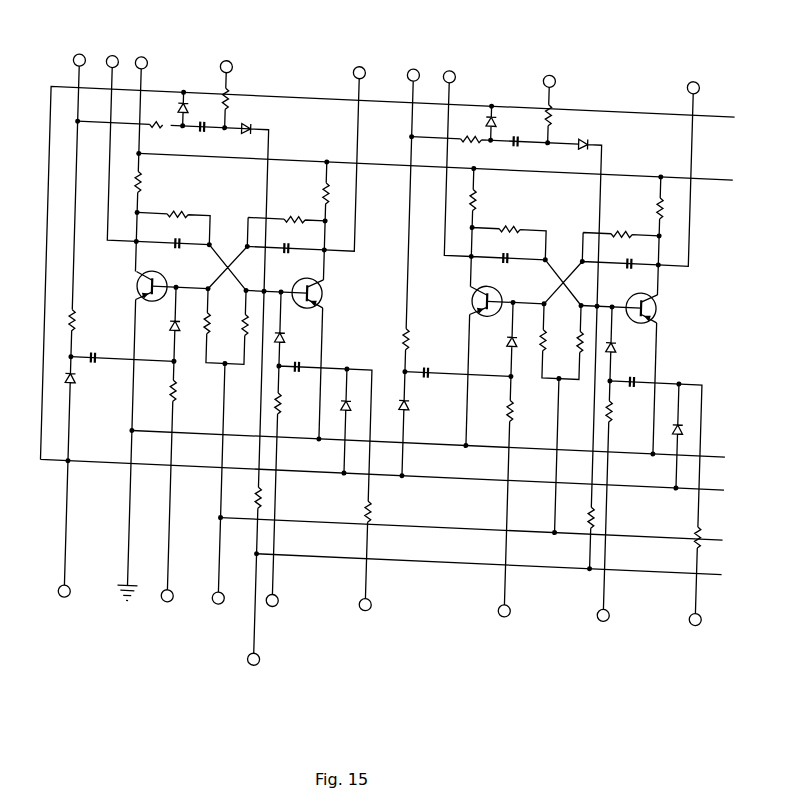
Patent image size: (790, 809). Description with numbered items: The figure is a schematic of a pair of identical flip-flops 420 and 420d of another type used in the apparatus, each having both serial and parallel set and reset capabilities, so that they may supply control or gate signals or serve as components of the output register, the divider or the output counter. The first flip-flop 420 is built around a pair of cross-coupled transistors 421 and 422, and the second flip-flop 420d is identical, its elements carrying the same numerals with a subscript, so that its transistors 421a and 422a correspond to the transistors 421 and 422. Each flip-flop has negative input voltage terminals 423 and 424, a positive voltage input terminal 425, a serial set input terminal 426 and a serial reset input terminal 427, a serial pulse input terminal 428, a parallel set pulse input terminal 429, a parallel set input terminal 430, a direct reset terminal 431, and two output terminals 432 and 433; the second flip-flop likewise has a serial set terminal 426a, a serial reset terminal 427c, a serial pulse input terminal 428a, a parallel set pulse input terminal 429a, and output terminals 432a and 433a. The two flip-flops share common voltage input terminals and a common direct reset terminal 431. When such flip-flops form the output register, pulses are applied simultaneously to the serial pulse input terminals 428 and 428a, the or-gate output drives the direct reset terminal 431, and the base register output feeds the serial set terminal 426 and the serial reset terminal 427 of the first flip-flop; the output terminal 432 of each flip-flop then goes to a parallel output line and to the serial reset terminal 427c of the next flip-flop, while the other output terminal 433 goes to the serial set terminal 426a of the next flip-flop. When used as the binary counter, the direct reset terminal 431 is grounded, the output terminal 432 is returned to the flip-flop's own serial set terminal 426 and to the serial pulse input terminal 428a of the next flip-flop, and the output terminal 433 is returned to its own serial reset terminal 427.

The flip-flop 420 is at (121, 618).
The second flip-flop circuit 420d is at (563, 600).
The transistor 421 is at (192, 254).
The transistor 422 is at (330, 276).
The transistor 421a is at (510, 271).
The transistor 422a is at (664, 276).
The negative input voltage terminal 423 is at (77, 595).
The negative input voltage terminal 424 is at (154, 53).
The positive voltage input terminal 425 is at (227, 594).
The serial set input terminal 426 is at (234, 50).
The serial set input terminal 426a is at (584, 36).
The serial reset input terminal 427 is at (182, 597).
The output terminal 427c is at (518, 592).
The serial pulse input terminal 428 is at (81, 51).
The serial pulse input terminal 428a is at (433, 26).
The parallel set pulse input terminal 429 is at (383, 592).
The parallel set pulse input terminal 429a is at (624, 593).
The parallel set input terminal 430 is at (289, 594).
The direct reset terminal 431 is at (278, 646).
The output terminal 432 is at (360, 52).
The output terminal 432a is at (694, 50).
The output terminal 433 is at (121, 28).
The output terminal 433a is at (496, 30).